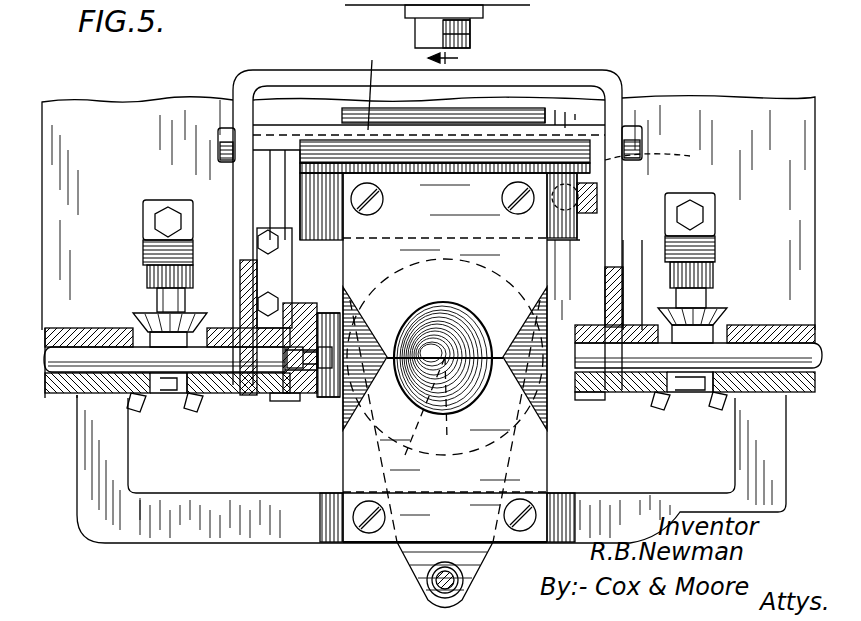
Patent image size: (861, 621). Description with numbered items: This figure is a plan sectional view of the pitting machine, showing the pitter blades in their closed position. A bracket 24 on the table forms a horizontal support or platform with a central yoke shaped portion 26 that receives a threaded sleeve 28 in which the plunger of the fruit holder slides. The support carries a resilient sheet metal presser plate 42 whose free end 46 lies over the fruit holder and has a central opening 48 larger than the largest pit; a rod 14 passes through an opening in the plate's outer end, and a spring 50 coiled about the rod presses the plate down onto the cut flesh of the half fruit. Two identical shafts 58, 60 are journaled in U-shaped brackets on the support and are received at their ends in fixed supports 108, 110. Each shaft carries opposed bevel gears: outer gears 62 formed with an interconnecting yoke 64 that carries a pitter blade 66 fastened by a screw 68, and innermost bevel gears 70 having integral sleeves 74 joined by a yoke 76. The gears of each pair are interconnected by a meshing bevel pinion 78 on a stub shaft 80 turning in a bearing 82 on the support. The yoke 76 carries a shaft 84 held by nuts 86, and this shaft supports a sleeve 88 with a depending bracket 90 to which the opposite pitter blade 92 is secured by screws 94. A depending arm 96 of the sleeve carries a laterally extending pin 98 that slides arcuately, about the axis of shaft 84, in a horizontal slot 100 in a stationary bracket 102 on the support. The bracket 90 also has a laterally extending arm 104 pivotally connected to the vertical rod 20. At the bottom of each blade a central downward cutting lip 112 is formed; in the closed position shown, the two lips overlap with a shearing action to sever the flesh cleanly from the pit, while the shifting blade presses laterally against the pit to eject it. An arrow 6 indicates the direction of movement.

The direction arrow 6 is at (453, 58).
The rod 14 is at (436, 585).
The vertical rod 20 is at (580, 195).
The bracket 24 is at (718, 110).
The yoke shaped portion 26 is at (560, 300).
The threaded sleeve 28 is at (468, 33).
The presser plate 42 is at (518, 110).
The free end of presser plate 46 is at (410, 560).
The central opening 48 is at (445, 377).
The spring 50 is at (487, 568).
The shaft 58 is at (62, 398).
The shaft 60 is at (638, 396).
The bevel gears 62 is at (140, 410).
The yoke 64 is at (135, 530).
The pitter blade 66 is at (445, 385).
The screw 68 is at (368, 528).
The innermost bevel gears 70 is at (193, 410).
The sleeve 74 is at (218, 330).
The yoke 76 is at (598, 72).
The bevel pinion 78 is at (145, 312).
The stub shaft 80 is at (170, 262).
The bearing 82 is at (148, 205).
The shaft 84 is at (302, 132).
The nuts 86 is at (228, 130).
The sleeve 88 is at (367, 83).
The depending bracket 90 is at (312, 202).
The pitter blade 92 is at (445, 357).
The screws 94 is at (380, 205).
The depending arm 96 is at (290, 180).
The pin 98 is at (300, 382).
The slot 100 is at (266, 368).
The stationary bracket 102 is at (258, 276).
The laterally extending arm 104 is at (592, 178).
The fixed support 108 is at (278, 402).
The fixed support 110 is at (65, 328).
The cutting point or lip 112 is at (447, 355).